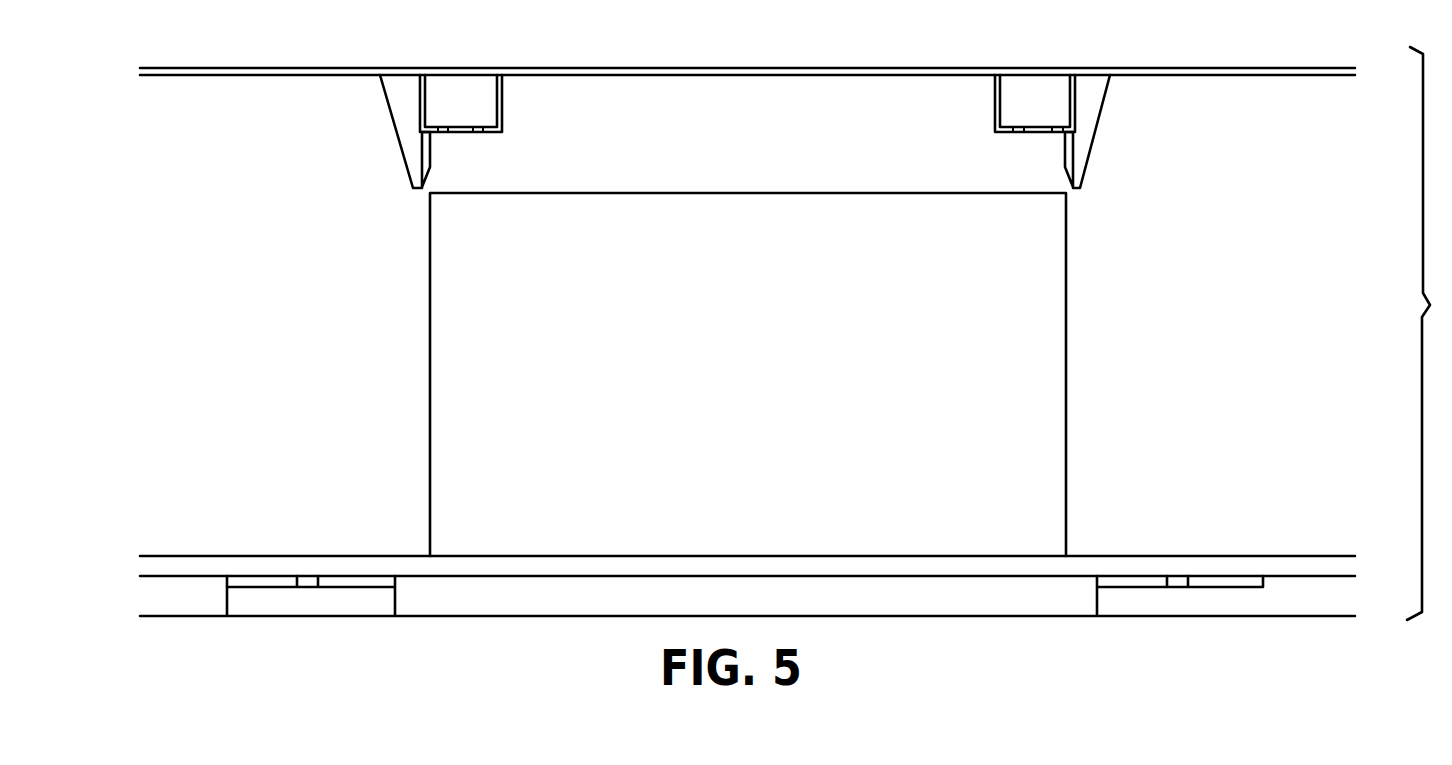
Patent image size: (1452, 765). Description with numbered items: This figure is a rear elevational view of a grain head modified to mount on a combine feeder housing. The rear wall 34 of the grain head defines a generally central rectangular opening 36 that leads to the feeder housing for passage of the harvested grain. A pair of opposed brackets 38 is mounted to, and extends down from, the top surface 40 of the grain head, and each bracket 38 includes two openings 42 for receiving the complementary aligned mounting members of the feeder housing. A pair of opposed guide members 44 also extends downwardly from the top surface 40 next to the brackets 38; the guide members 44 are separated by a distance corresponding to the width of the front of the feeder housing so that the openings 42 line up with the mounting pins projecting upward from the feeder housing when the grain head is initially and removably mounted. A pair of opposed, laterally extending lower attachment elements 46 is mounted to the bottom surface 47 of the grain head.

The rear wall 34 is at (280, 343).
The rectangular opening 36 is at (1066, 352).
The brackets 38 is at (505, 105).
The top surface 40 is at (768, 68).
The openings 42 is at (443, 127).
The guide members 44 is at (393, 123).
The lower attachment elements 46 is at (350, 588).
The bottom surface 47 is at (585, 576).